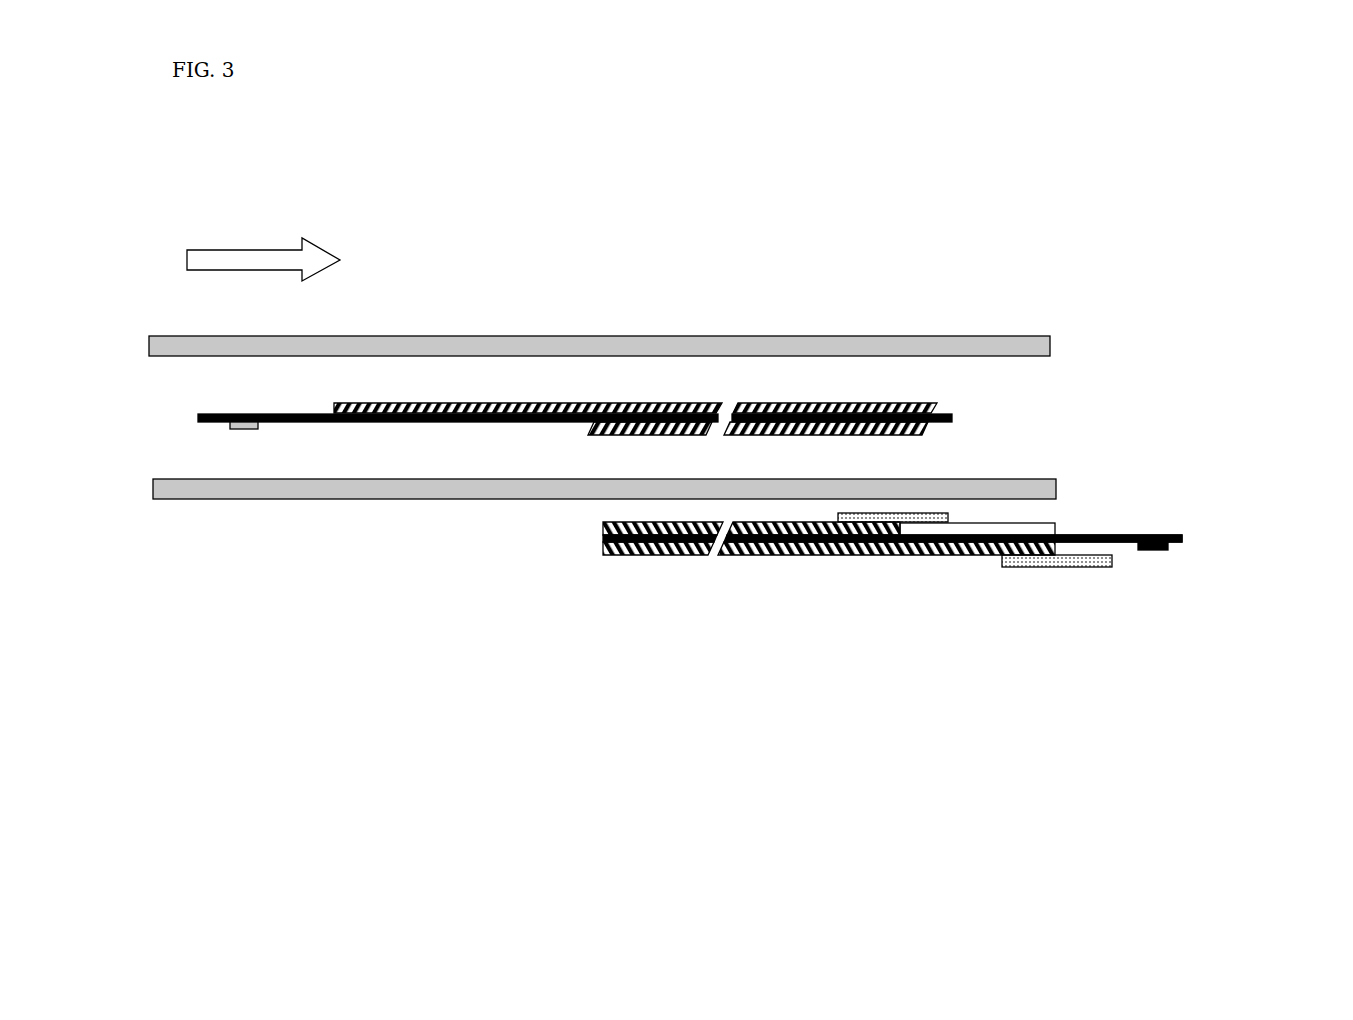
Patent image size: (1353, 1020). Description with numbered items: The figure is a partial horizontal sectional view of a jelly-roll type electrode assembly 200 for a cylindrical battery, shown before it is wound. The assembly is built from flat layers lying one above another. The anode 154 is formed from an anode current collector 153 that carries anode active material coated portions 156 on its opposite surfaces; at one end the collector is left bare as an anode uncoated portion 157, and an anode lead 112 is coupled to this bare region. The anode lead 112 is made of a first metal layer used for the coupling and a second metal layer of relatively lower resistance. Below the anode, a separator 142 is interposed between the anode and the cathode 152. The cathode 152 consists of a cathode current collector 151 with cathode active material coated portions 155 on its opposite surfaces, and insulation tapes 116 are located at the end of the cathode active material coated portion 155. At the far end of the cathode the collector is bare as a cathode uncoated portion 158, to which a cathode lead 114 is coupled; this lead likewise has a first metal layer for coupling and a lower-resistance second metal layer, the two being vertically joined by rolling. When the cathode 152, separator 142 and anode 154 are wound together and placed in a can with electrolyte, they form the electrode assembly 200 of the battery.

The jelly-roll type electrode assembly 200 is at (200, 213).
The anode lead 112 is at (250, 429).
The cathode lead 114 is at (1168, 549).
The insulation tapes 116 is at (910, 523).
The separator 142 is at (348, 506).
The cathode current collector 151 is at (627, 555).
The cathode 152 is at (785, 611).
The anode current collector 153 is at (790, 403).
The anode 154 is at (888, 386).
The cathode active material coated portions 155 is at (845, 522).
The anode active material coated portions 156 is at (592, 403).
The anode uncoated portion 157 is at (198, 407).
The cathode uncoated portion 158 is at (1055, 529).